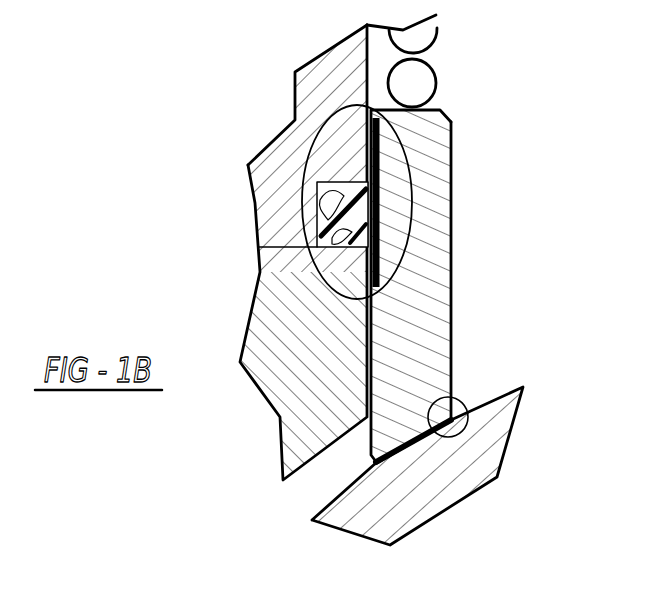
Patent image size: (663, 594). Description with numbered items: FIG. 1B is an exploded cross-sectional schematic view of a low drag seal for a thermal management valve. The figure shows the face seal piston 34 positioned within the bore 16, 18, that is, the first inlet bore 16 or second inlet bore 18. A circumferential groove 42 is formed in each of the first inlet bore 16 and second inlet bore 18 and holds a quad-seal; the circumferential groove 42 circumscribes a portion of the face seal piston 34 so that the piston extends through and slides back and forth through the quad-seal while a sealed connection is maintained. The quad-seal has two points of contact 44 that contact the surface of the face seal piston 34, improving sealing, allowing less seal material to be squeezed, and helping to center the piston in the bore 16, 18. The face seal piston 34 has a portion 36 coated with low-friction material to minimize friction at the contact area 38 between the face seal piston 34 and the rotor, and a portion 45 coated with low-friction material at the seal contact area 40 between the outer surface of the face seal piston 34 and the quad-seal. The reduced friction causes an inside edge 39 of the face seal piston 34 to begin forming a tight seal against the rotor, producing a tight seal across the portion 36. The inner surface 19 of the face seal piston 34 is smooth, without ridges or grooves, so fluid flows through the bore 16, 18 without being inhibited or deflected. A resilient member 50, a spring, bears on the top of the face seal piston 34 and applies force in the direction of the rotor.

The first inlet bore 16 is at (256, 252).
The second inlet bore 18 is at (273, 200).
The inner surface 19 is at (452, 270).
The face seal piston 34 is at (433, 313).
The portion coated with low-friction material 36 is at (442, 433).
The contact area 38 is at (343, 487).
The inside edge 39 is at (448, 398).
The seal contact area 40 is at (295, 119).
The circumferential groove 42 is at (340, 247).
The points of contact 44 is at (380, 192).
The portion coated with low-friction material 45 is at (380, 156).
The resilient member 50 is at (438, 80).